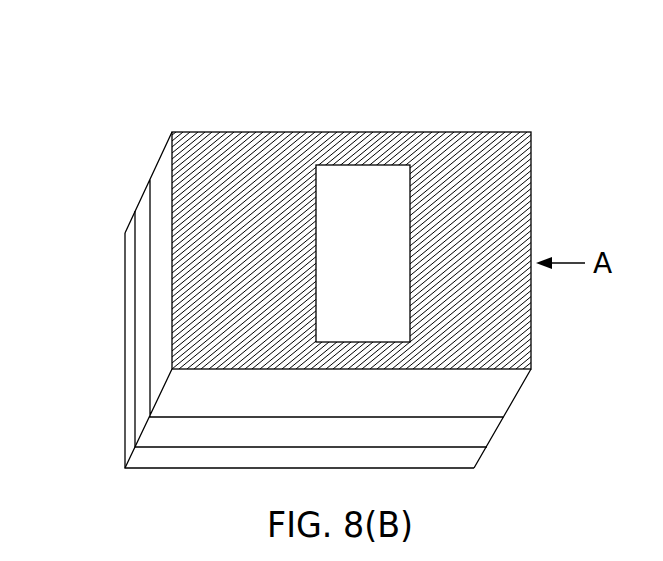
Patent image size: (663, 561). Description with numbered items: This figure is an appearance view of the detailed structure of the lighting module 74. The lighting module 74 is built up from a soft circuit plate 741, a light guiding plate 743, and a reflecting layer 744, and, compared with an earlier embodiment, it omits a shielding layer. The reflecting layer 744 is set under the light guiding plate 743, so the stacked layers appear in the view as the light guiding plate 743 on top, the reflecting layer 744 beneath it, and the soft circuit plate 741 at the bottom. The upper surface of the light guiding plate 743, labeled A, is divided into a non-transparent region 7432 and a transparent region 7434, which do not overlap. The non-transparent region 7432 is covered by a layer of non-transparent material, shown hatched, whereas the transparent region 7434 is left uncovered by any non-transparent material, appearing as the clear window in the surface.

The lighting module 74 is at (288, 239).
The soft circuit plate 741 is at (130, 219).
The light guiding plate 743 is at (163, 147).
The reflecting layer 744 is at (143, 192).
The non-transparent region 7432 is at (245, 178).
The transparent region 7434 is at (353, 180).